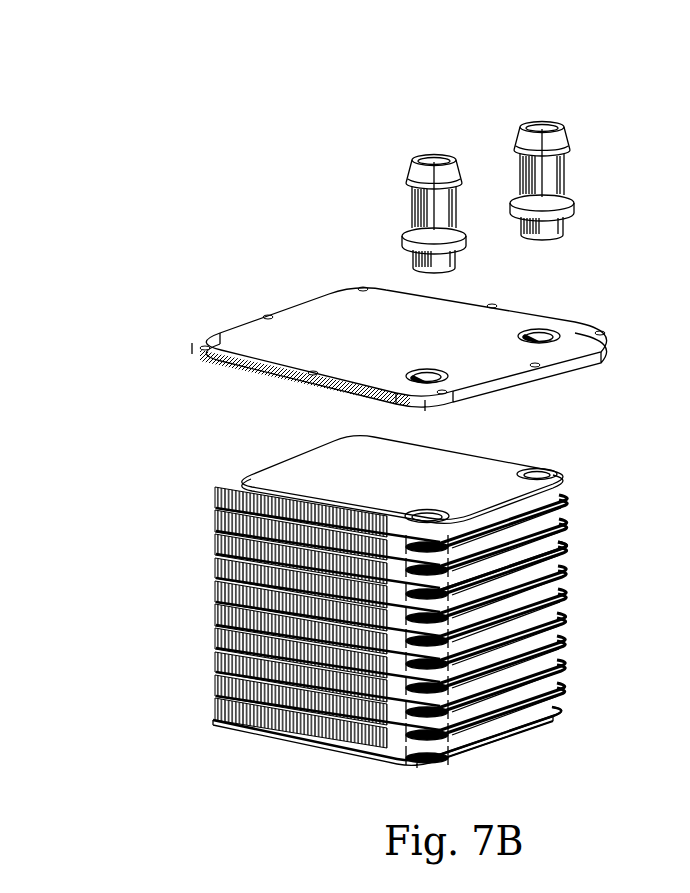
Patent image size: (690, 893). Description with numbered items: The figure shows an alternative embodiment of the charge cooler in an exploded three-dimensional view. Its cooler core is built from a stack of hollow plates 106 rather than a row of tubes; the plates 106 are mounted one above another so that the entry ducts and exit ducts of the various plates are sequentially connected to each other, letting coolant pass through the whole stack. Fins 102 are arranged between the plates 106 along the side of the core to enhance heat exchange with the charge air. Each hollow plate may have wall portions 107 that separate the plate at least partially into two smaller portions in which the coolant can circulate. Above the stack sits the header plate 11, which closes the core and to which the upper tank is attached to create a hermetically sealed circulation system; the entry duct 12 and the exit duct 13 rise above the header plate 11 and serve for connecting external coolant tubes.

The header plate 11 is at (235, 345).
The entry duct 12 is at (417, 157).
The exit duct 13 is at (527, 128).
The fins 102 is at (230, 573).
The hollow plates 106 is at (567, 547).
The wall portions 107 is at (500, 737).